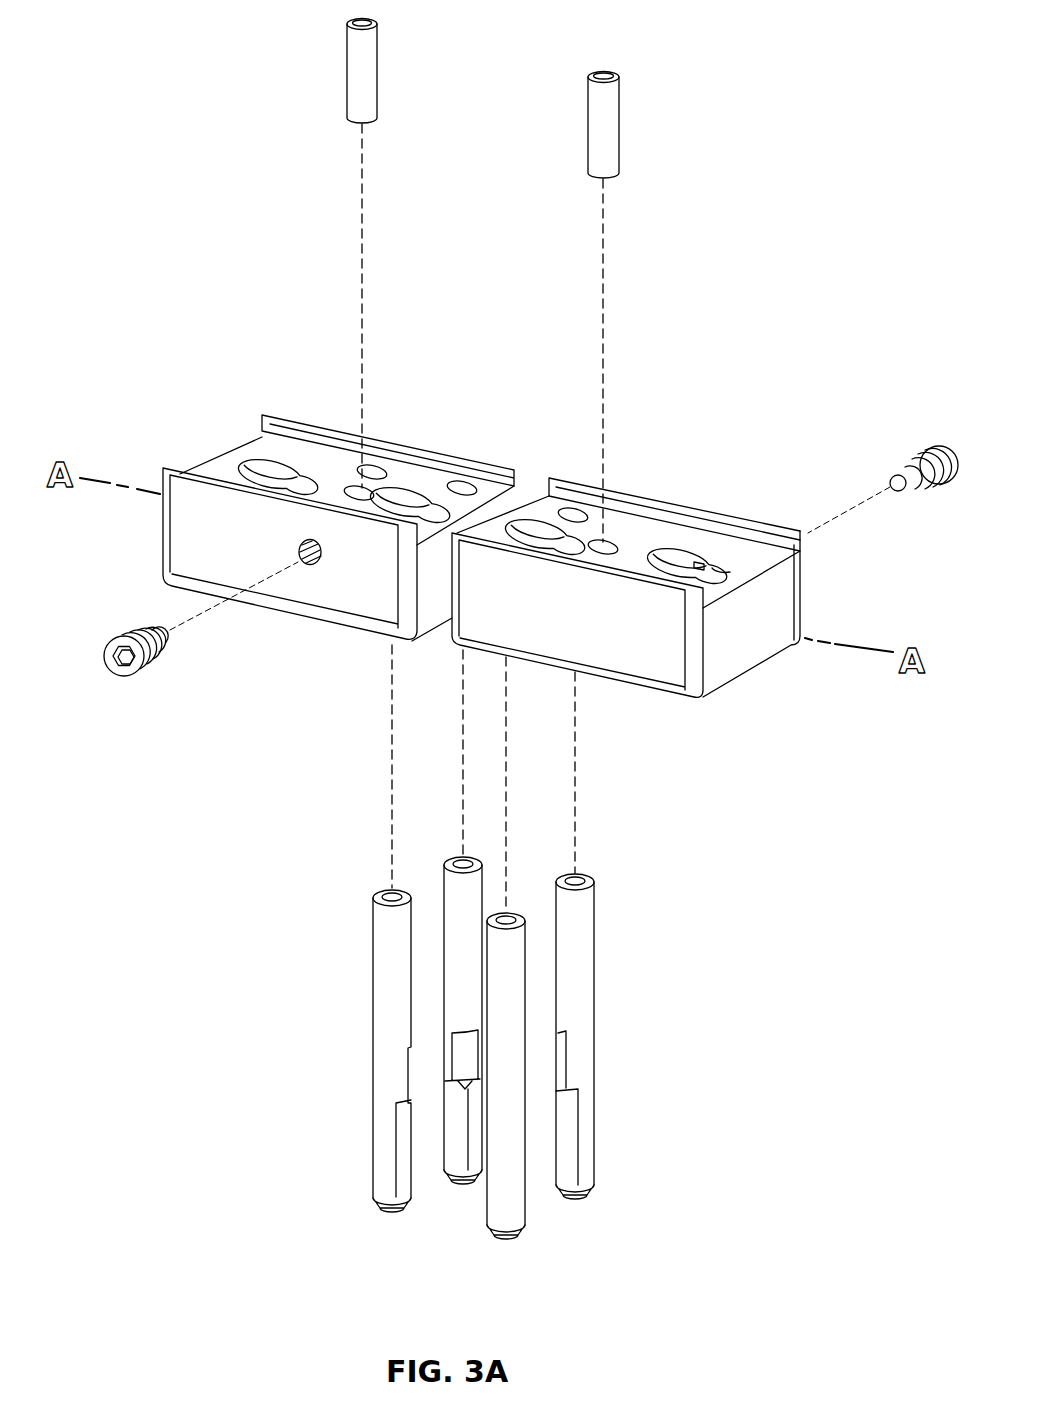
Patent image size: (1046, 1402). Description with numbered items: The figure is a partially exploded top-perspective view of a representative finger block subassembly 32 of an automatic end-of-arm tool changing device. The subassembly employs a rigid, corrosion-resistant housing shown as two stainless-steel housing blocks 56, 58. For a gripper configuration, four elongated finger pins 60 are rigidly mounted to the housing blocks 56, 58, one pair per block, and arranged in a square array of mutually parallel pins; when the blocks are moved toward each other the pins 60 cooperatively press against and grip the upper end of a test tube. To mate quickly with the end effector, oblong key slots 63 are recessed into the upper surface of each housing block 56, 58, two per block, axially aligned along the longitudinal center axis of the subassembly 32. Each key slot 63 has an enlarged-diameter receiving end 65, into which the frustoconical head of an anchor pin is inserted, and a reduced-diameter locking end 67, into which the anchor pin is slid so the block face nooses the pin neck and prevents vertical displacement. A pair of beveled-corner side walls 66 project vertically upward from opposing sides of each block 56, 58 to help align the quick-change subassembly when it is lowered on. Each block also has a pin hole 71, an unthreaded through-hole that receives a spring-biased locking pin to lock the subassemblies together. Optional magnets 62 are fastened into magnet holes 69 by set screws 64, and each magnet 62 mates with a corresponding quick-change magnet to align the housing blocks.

The finger block subassembly 32 is at (783, 142).
The finger block housing block 56 is at (292, 590).
The finger block housing block 58 is at (637, 668).
The finger pin 60 is at (393, 1198).
The finger block magnet 62 is at (347, 38).
The key slot 63 is at (262, 477).
The set screw 64 is at (148, 672).
The receiving end 65 is at (726, 572).
The beveled-corner side wall 66 is at (292, 421).
The locking end 67 is at (700, 566).
The finger block magnet hole 69 is at (352, 490).
The finger block pin hole 71 is at (388, 478).